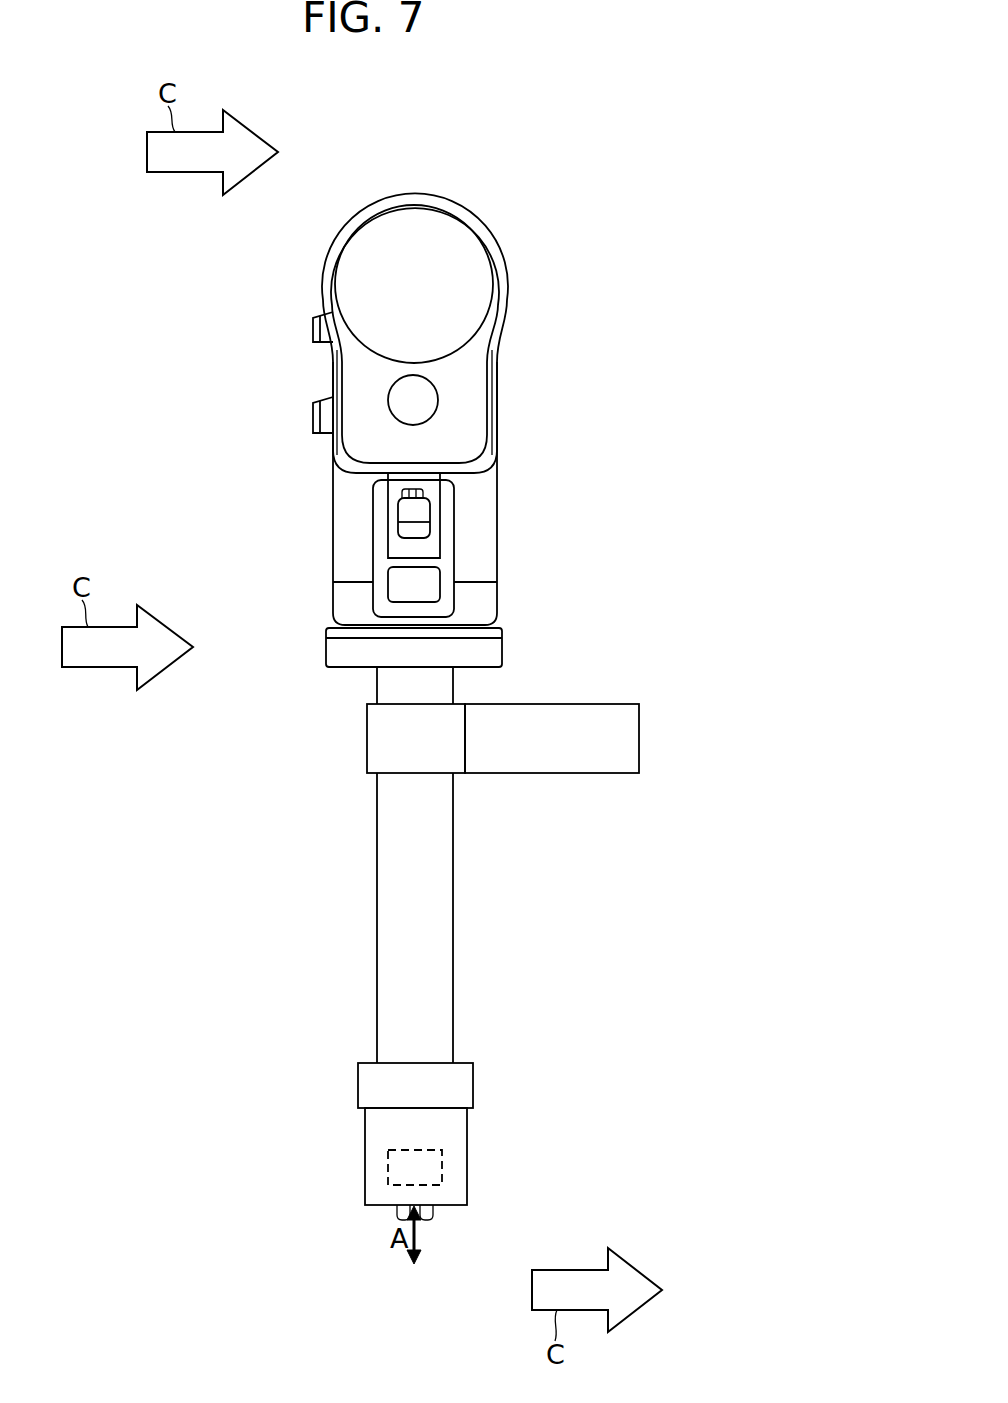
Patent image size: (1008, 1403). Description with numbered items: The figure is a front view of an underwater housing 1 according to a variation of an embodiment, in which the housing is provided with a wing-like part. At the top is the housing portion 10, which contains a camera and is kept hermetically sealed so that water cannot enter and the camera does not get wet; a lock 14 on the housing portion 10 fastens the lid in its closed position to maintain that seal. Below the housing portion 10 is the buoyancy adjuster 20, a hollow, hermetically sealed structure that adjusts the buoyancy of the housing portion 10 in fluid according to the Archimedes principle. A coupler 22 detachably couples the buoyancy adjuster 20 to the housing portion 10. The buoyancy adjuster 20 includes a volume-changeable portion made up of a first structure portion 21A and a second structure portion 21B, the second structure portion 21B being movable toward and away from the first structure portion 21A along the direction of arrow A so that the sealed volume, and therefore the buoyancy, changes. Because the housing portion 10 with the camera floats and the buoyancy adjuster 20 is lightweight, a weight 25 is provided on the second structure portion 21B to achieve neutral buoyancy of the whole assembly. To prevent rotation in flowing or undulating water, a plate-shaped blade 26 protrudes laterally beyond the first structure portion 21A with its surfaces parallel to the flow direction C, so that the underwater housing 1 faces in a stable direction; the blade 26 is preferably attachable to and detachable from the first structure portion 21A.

The underwater housing 1 is at (526, 203).
The housing portion 10 is at (497, 412).
The lock 14 is at (454, 548).
The coupler 22 is at (502, 648).
The buoyancy adjuster 20 is at (377, 957).
The blade 26 is at (617, 778).
The first structure portion 21A is at (453, 868).
The second structure portion 21B is at (467, 1140).
The weight 25 is at (373, 1180).